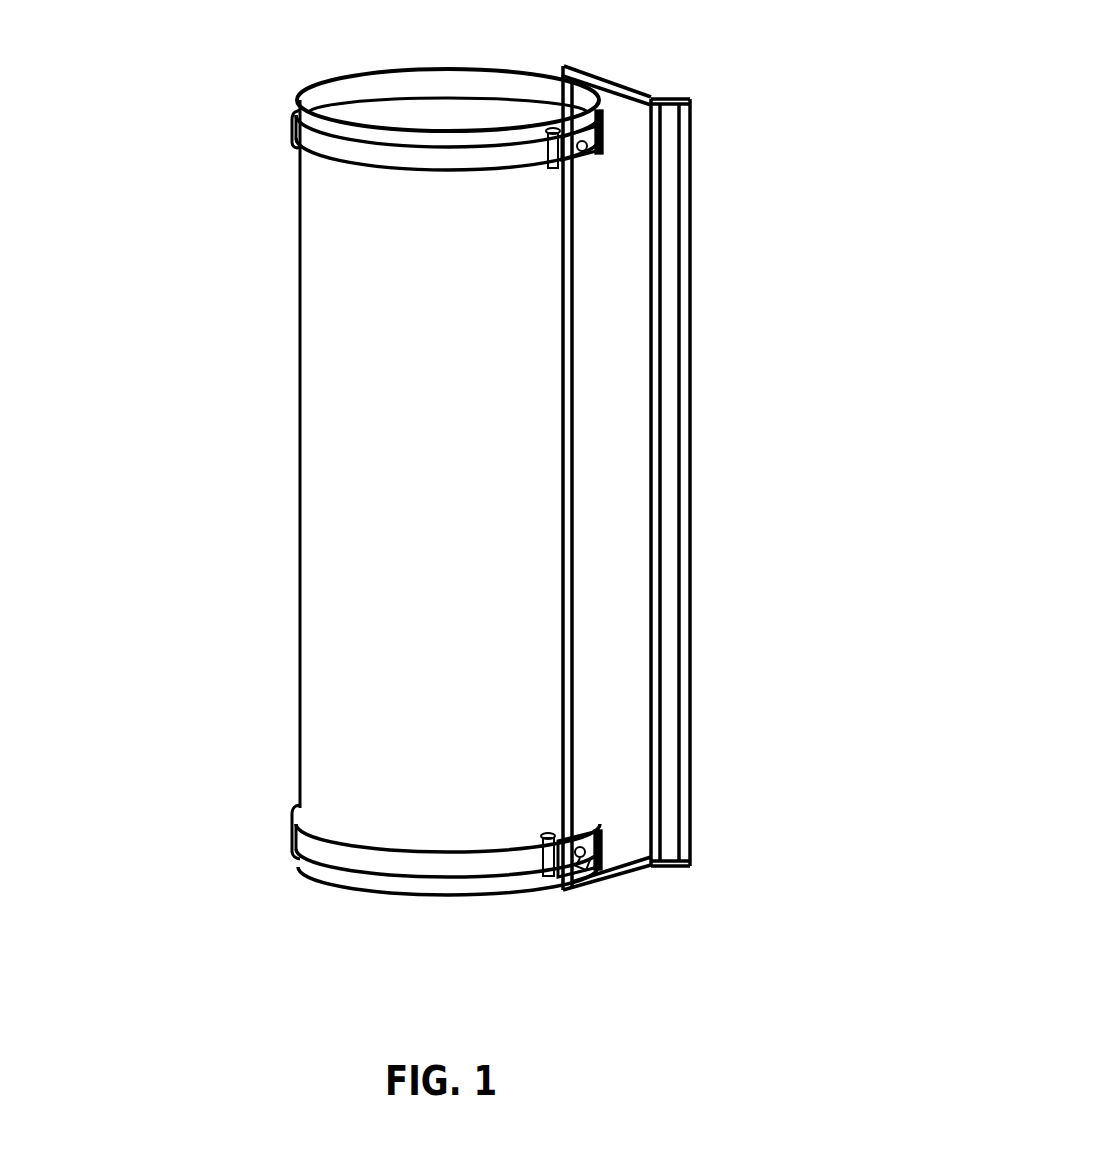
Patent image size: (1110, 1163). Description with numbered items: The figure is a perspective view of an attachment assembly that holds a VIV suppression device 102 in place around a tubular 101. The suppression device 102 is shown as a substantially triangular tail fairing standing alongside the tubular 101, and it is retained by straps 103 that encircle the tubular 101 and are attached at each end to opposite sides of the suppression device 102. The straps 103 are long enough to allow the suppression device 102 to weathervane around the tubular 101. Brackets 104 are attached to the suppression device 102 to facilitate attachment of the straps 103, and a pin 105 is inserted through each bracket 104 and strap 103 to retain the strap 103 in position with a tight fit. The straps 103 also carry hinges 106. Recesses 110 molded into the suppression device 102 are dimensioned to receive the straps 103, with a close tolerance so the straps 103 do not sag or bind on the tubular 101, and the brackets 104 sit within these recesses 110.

The tubular 101 is at (345, 357).
The VIV suppression device 102 is at (618, 535).
The straps 103 is at (300, 131).
The brackets 104 is at (608, 133).
The pin 105 is at (600, 155).
The hinges 106 is at (572, 163).
The recesses 110 is at (607, 125).